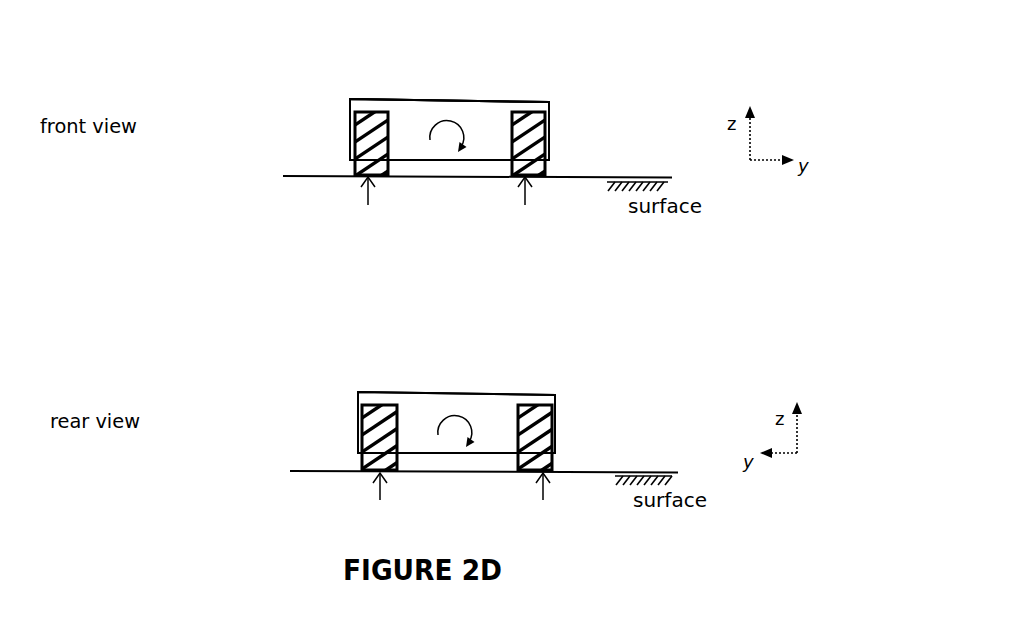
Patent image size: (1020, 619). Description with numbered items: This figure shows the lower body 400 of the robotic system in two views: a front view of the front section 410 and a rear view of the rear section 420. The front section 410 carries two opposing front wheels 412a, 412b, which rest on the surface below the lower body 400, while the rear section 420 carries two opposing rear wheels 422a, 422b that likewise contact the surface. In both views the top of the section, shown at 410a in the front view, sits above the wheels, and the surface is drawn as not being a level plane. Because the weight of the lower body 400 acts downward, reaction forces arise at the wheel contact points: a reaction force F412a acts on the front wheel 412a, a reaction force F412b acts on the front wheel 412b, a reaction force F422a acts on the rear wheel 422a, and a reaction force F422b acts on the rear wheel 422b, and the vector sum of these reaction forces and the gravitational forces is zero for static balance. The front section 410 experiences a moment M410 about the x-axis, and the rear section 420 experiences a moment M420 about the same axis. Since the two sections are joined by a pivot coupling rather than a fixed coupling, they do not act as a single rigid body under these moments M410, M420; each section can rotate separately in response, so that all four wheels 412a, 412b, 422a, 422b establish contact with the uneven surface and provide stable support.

The lower body 400 is at (350, 26).
The front section 410 is at (448, 153).
The top surface of body 410a is at (429, 92).
The front wheel 412a is at (370, 143).
The front wheel 412b is at (547, 132).
The reaction force F412a is at (374, 204).
The reaction force F412b is at (529, 204).
The moment M410 is at (465, 129).
The rear section 420 is at (455, 448).
The rear wheel 422a is at (553, 427).
The rear wheel 422b is at (367, 433).
The reaction force F422a is at (543, 498).
The reaction force F422b is at (379, 498).
The moment M420 is at (472, 423).